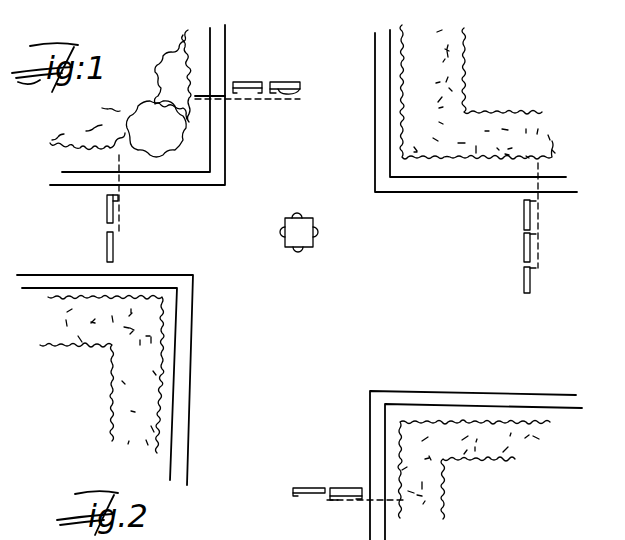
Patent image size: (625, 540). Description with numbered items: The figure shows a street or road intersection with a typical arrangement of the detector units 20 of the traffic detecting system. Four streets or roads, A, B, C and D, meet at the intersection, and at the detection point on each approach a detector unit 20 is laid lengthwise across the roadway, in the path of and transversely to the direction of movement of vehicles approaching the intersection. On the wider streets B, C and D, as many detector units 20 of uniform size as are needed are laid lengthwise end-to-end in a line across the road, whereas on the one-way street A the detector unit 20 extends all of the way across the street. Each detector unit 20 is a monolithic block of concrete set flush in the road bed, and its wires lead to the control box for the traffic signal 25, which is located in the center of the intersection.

The detector unit 20 is at (115, 208).
The traffic signal 25 is at (297, 228).
The street A is at (42, 226).
The street B is at (306, 48).
The street C is at (480, 165).
The street D is at (284, 440).